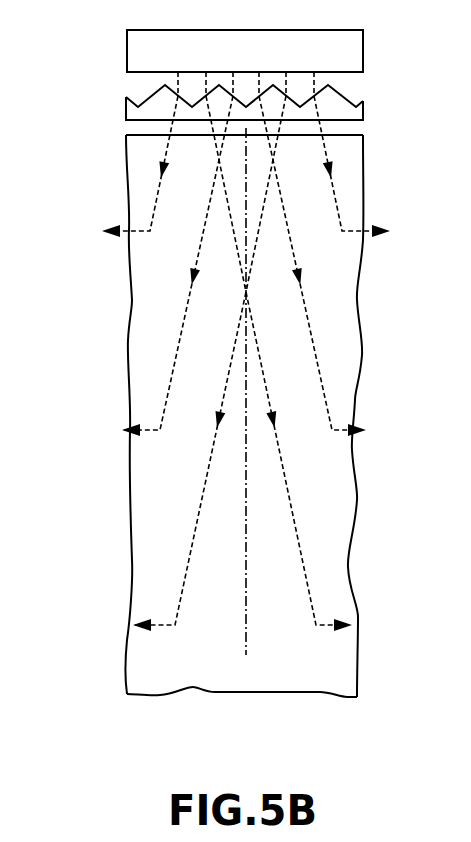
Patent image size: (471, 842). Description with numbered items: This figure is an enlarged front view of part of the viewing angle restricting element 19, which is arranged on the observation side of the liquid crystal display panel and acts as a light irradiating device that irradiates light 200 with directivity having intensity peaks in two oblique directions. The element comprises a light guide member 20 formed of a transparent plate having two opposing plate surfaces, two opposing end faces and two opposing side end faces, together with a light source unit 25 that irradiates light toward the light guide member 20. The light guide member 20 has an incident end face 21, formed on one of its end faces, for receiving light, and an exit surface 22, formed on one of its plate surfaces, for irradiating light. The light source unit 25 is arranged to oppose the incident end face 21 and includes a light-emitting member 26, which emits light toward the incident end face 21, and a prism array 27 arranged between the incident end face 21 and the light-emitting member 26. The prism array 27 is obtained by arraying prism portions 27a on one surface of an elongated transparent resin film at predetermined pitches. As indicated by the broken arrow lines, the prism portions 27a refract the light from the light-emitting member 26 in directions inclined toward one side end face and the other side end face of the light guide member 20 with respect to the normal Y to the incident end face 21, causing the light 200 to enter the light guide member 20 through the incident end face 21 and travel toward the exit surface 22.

The light source unit 25 is at (112, 68).
The light-emitting member 26 is at (358, 50).
The prism array 27 is at (125, 115).
The prism portions 27a is at (338, 94).
The incident end face 21 is at (365, 134).
The exit surface 22 is at (340, 553).
The viewing angle restricting element 19 is at (112, 684).
The light guide member 20 is at (237, 695).
The normal to the incident end face Y is at (246, 643).
The light 200 is at (142, 237).